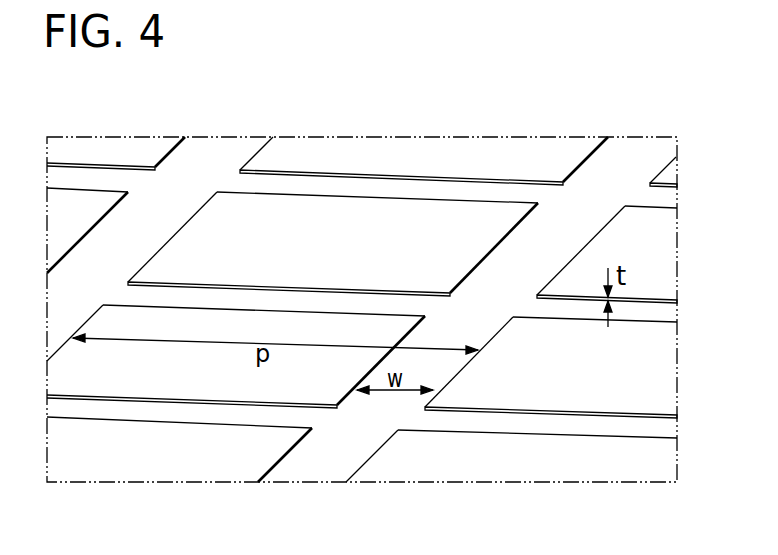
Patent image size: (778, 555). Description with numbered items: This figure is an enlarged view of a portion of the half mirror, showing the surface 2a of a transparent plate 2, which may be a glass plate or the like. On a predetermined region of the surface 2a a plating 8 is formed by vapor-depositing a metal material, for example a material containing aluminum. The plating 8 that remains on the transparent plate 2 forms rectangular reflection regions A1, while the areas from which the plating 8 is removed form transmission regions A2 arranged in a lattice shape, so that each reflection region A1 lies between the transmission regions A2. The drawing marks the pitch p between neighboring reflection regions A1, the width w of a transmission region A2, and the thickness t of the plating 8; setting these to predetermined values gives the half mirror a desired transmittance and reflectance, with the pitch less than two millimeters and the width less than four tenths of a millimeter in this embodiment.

The surface 2a is at (635, 148).
The transparent plate 2 is at (387, 276).
The reflection region A1 is at (347, 227).
The transmission region A2 is at (182, 180).
The plating 8 is at (568, 385).